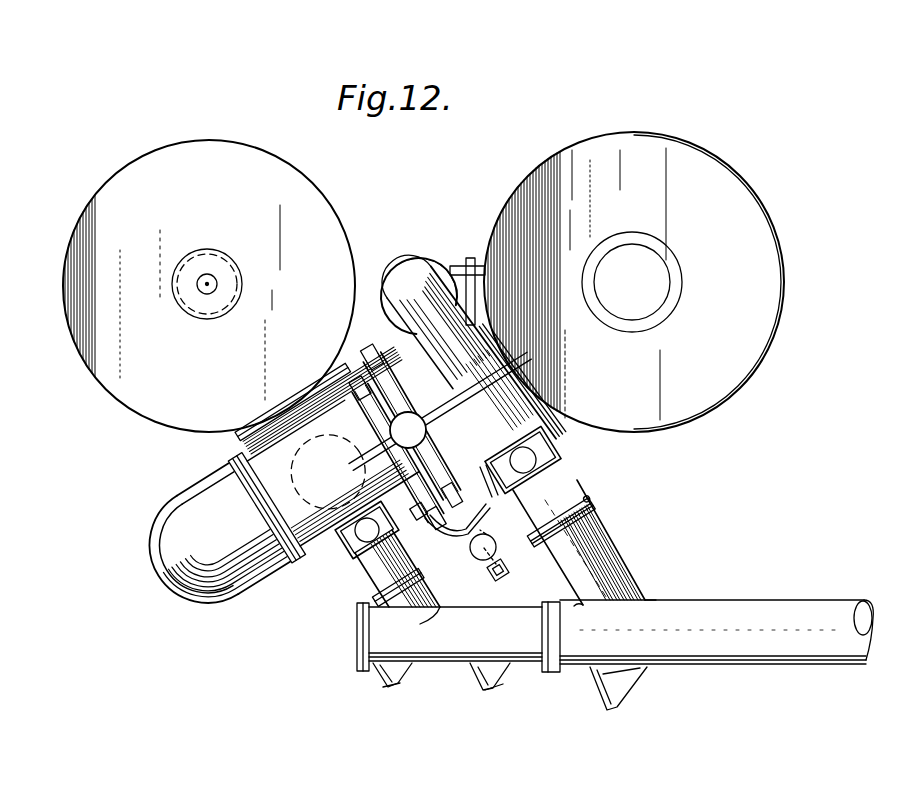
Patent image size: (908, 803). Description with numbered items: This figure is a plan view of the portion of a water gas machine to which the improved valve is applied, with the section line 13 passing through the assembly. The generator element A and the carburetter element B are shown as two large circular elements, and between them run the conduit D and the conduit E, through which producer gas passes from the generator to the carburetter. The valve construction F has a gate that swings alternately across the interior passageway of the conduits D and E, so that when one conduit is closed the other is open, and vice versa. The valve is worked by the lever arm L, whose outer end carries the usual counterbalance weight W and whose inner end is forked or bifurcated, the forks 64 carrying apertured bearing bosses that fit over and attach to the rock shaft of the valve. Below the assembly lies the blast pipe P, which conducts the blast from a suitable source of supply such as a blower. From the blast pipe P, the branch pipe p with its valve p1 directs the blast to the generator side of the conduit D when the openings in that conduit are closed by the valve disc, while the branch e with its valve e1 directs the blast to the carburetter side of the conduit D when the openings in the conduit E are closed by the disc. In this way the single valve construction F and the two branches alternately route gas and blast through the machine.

The section line 13 is at (250, 524).
The generator element A is at (634, 282).
The carburetter element B is at (244, 368).
The conduit D is at (340, 431).
The conduit E is at (445, 280).
The valve construction F is at (371, 352).
The blast pipe P is at (615, 655).
The branch pipe p is at (600, 543).
The valve p1 is at (548, 458).
The counterbalance weight W is at (498, 547).
The lever arm L is at (500, 578).
The forks 64 is at (440, 540).
The branch e is at (380, 577).
The valve e1 is at (345, 548).